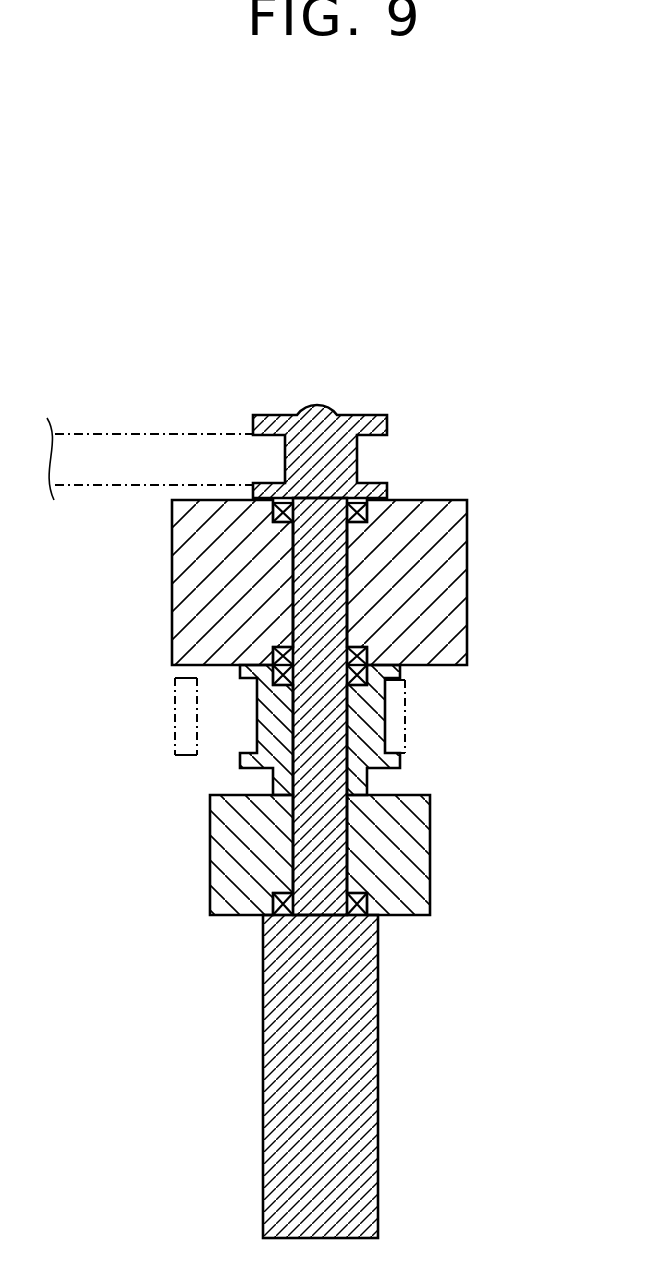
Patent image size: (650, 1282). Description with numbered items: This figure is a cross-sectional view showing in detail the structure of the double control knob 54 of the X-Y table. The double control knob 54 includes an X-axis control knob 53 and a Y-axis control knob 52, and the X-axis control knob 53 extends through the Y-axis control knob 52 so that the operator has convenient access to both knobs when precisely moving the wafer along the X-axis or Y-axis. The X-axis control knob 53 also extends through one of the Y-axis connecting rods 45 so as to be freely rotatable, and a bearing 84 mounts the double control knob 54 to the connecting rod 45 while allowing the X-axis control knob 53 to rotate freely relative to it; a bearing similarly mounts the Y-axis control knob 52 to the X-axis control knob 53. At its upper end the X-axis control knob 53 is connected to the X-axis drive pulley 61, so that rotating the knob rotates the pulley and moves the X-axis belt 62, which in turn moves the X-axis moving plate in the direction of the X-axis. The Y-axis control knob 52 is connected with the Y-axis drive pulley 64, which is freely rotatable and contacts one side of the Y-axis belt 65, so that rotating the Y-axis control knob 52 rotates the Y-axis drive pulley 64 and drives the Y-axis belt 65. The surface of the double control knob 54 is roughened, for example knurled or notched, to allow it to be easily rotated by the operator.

The X-axis drive pulley 61 is at (323, 405).
The X-axis belt 62 is at (155, 437).
The bearing 84 is at (367, 510).
The Y-axis connecting rod 45 is at (467, 565).
The Y-axis drive pulley 64 is at (375, 724).
The Y-axis belt 65 is at (405, 703).
The Y-axis control knob 52 is at (418, 865).
The X-axis control knob 53 is at (378, 958).
The double control knob 54 is at (523, 872).